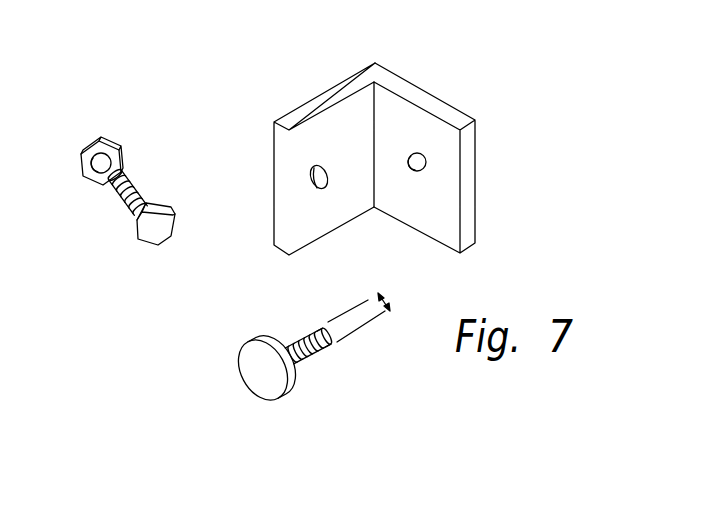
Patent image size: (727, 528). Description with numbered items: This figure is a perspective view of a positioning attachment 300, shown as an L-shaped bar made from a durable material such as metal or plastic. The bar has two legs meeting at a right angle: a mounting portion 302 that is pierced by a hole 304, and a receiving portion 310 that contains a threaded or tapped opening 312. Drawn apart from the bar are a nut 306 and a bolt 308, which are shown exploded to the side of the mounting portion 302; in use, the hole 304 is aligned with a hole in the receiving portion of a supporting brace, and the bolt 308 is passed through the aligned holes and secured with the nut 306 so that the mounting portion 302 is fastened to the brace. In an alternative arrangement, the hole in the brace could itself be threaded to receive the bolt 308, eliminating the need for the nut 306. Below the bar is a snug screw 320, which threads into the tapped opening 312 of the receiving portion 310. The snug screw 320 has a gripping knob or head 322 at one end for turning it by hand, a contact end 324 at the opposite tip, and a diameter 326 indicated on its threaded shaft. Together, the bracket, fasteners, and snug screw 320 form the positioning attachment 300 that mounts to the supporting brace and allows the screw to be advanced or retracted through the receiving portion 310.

The positioning attachment 300 is at (548, 53).
The mounting portion 302 is at (312, 138).
The hole 304 is at (327, 167).
The receiving portion 310 is at (414, 128).
The threaded or tapped opening 312 is at (427, 160).
The nut 306 is at (83, 177).
The bolt 308 is at (150, 228).
The snug screw 320 is at (307, 333).
The gripping knob or head 322 is at (262, 377).
The contact end 324 is at (328, 337).
The diameter 326 is at (385, 299).